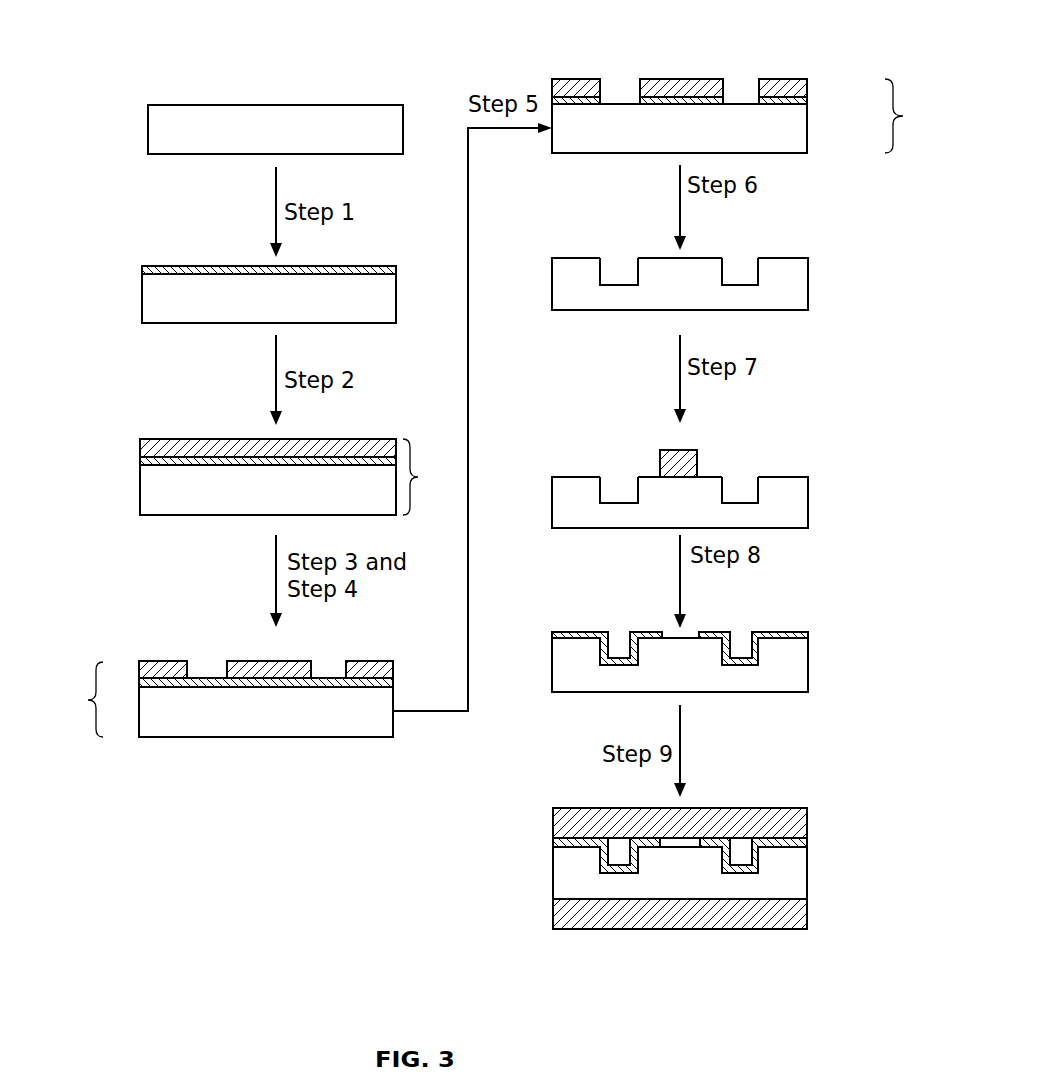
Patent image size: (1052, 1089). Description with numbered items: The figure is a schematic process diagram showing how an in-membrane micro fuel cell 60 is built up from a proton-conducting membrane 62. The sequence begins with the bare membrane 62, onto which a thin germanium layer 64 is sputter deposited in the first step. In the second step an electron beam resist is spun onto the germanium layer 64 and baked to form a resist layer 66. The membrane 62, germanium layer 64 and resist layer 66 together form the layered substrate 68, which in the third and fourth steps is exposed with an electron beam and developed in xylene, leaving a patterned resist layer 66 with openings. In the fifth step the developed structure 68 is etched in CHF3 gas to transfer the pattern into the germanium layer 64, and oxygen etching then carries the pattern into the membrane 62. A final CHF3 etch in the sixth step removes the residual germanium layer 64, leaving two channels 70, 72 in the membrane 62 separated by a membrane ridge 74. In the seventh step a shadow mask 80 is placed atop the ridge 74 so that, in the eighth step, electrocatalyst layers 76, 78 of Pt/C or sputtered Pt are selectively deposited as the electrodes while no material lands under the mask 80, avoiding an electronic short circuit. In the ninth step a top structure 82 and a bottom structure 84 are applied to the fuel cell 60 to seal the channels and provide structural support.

The in-membrane micro fuel cell 60 is at (822, 655).
The proton-conducting membrane 62 is at (148, 127).
The germanium layer 64 is at (188, 266).
The resist layer 66 is at (185, 439).
The layered substrate 68 is at (495, 408).
The channel 70 is at (617, 262).
The channel 72 is at (748, 267).
The membrane ridge 74 is at (698, 258).
The electrocatalyst layer 76 is at (595, 632).
The electrocatalyst layer 78 is at (778, 632).
The shadow mask 80 is at (672, 450).
The top structure 82 is at (782, 808).
The bottom structure 84 is at (767, 929).